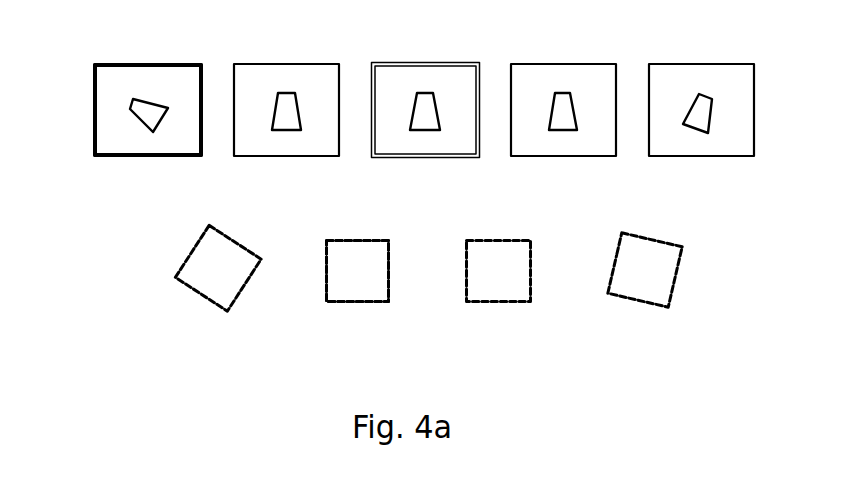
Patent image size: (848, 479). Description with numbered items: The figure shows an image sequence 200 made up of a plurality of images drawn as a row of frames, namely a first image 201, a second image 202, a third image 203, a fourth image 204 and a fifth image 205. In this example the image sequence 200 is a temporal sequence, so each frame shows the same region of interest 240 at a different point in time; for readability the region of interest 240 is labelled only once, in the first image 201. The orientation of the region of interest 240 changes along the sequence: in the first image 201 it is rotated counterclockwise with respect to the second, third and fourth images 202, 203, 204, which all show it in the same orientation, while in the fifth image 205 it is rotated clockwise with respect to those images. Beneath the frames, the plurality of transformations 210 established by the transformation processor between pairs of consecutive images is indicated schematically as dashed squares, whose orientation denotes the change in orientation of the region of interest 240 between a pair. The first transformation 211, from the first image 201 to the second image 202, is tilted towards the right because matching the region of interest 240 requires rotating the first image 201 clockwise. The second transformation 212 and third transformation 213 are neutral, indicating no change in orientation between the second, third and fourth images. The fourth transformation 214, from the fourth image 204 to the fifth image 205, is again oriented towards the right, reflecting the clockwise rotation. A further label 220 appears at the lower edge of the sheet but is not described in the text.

The image sequence 200 is at (95, 47).
The first image 201 is at (155, 158).
The second image 202 is at (292, 158).
The third image 203 is at (430, 159).
The fourth image 204 is at (569, 158).
The fifth image 205 is at (705, 158).
The region of interest 240 is at (140, 135).
The plurality of transformations 210 is at (95, 246).
The first transformation 211 is at (227, 318).
The second transformation 212 is at (363, 319).
The third transformation 213 is at (502, 318).
The fourth transformation 214 is at (640, 320).
The third sequence (partially shown) 220 is at (42, 475).